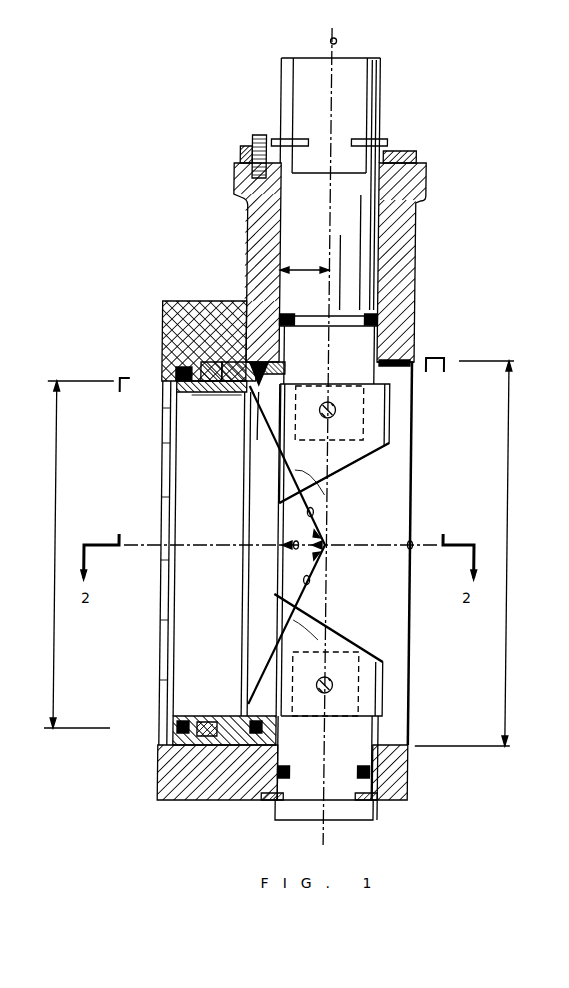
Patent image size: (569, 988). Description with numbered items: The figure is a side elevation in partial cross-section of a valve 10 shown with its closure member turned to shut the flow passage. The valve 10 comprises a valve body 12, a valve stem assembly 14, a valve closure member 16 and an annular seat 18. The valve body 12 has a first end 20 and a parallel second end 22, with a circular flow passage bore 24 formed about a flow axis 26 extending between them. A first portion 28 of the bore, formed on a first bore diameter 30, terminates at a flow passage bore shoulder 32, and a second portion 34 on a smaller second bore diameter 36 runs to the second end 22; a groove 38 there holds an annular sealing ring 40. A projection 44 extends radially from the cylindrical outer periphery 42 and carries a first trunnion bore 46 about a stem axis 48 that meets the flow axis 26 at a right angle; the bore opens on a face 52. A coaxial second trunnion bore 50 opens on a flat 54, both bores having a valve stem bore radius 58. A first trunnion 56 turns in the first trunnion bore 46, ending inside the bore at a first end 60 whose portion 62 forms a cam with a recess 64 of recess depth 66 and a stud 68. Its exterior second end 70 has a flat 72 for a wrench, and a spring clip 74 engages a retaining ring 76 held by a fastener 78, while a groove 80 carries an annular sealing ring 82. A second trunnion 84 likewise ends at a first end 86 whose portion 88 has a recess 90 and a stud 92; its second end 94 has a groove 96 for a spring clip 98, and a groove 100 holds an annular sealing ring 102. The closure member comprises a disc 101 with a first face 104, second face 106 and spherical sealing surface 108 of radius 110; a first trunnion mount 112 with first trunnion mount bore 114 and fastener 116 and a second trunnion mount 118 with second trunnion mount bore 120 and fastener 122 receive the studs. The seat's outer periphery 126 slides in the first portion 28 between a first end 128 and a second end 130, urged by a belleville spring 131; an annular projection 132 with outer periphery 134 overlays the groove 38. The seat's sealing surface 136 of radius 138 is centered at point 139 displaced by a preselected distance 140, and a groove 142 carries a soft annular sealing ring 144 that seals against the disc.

The valve 10 is at (478, 136).
The valve body 12 is at (418, 251).
The valve stem assembly 14 is at (380, 99).
The valve closure member 16 is at (249, 628).
The annular seat 18 is at (168, 752).
The first end 20 is at (420, 330).
The second end 22 is at (168, 332).
The flow passage bore 24 is at (385, 607).
The flow axis 26 is at (418, 550).
The first portion 28 is at (400, 366).
The first bore diameter 30 is at (515, 530).
The flow passage bore shoulder 32 is at (176, 314).
The second portion 34 is at (180, 395).
The second bore diameter 36 is at (63, 519).
The groove 38 is at (182, 372).
The annular sealing ring 40 is at (192, 372).
The outer periphery 42 is at (205, 356).
The projection 44 is at (428, 190).
The first trunnion bore 46 is at (415, 232).
The stem axis 48 is at (337, 41).
The second trunnion bore 50 is at (408, 760).
The face 52 is at (428, 168).
The flat 54 is at (400, 800).
The first trunnion 56 is at (342, 220).
The valve stem bore radius 58 is at (305, 268).
The first end 60 is at (395, 394).
The portion 62 is at (395, 418).
The recess 64 is at (310, 386).
The recess depth 66 is at (300, 330).
The stud 68 is at (345, 430).
The second end 70 is at (352, 58).
The flat 72 is at (357, 86).
The spring clip 74 is at (381, 141).
The retaining ring 76 is at (400, 154).
The fastener 78 is at (259, 136).
The groove 80 is at (350, 312).
The annular sealing ring 82 is at (382, 320).
The second trunnion 84 is at (386, 802).
The first end 86 is at (392, 708).
The portion 88 is at (388, 734).
The recess 90 is at (290, 742).
The stud 92 is at (355, 652).
The second end 94 is at (346, 810).
The groove 96 is at (322, 806).
The spring clip 98 is at (280, 798).
The groove 100 is at (326, 764).
The annular sealing ring 102 is at (342, 766).
The first face 104 is at (248, 492).
The second face 106 is at (248, 471).
The sealing surface 108 is at (254, 412).
The radius 110 is at (320, 515).
The first trunnion mount 112 is at (350, 452).
The first trunnion mount bore 114 is at (322, 480).
The fastener 116 is at (338, 414).
The second trunnion mount 118 is at (342, 642).
The second trunnion mount bore 120 is at (300, 620).
The fastener 122 is at (345, 684).
The outer periphery 126 is at (258, 300).
The first end 128 is at (310, 366).
The second end 130 is at (240, 364).
The belleville spring 131 is at (212, 366).
The annular projection 132 is at (240, 392).
The outer periphery 134 is at (170, 383).
The sealing surface 136 is at (252, 447).
The radius 138 is at (318, 594).
The center point 139 is at (345, 545).
The preselected distance 140 is at (300, 547).
The groove 142 is at (288, 366).
The annular sealing ring 144 is at (262, 425).
The disc 101 is at (240, 529).